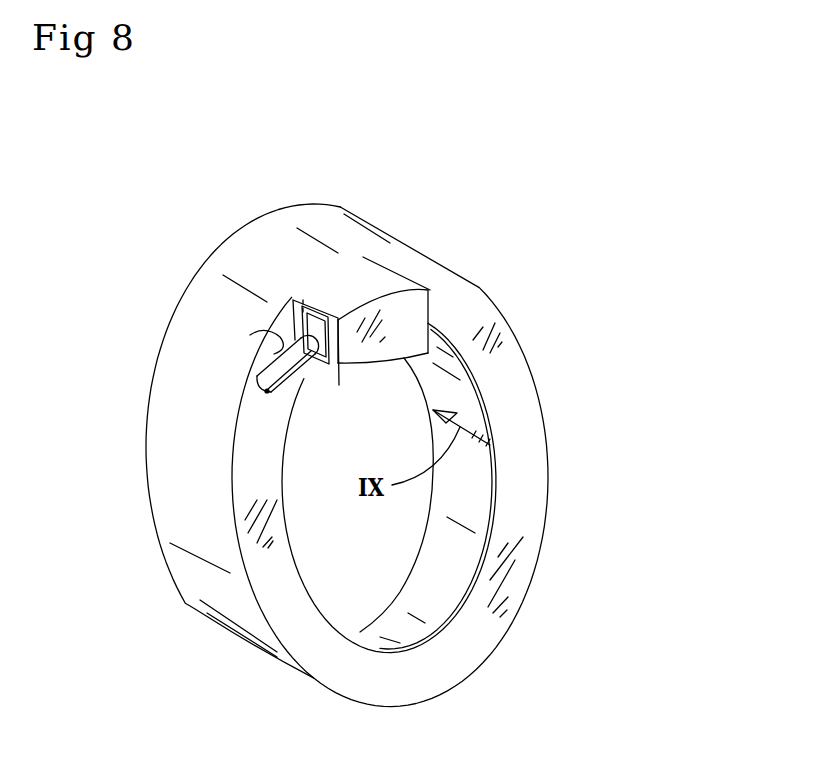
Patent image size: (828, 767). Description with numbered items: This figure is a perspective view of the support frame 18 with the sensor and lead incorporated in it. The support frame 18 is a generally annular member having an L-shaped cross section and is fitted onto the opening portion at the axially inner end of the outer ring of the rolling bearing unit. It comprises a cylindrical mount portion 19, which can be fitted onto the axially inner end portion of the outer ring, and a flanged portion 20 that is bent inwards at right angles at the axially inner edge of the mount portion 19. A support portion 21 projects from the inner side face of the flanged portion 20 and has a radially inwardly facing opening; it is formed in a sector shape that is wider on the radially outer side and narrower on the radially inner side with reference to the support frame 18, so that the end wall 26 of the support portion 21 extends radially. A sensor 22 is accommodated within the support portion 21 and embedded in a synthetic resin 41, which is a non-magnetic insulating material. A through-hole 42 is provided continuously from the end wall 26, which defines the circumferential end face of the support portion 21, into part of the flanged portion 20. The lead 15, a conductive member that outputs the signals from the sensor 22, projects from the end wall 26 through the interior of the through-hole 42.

The lead 15 is at (262, 378).
The support frame 18 is at (178, 463).
The cylindrical mount portion 19 is at (212, 599).
The flanged portion 20 is at (530, 510).
The support portion 21 is at (420, 313).
The sensor 22 is at (303, 300).
The end wall 26 is at (363, 257).
The synthetic resin 41 is at (305, 330).
The through-hole 42 is at (263, 342).